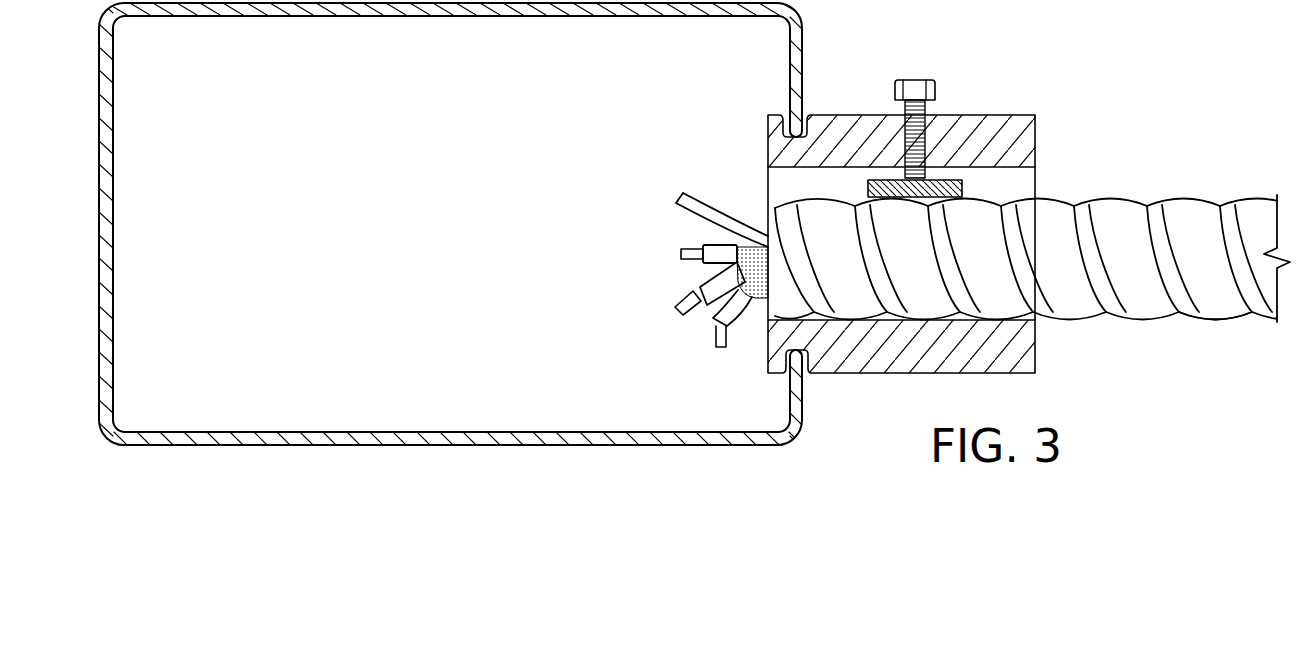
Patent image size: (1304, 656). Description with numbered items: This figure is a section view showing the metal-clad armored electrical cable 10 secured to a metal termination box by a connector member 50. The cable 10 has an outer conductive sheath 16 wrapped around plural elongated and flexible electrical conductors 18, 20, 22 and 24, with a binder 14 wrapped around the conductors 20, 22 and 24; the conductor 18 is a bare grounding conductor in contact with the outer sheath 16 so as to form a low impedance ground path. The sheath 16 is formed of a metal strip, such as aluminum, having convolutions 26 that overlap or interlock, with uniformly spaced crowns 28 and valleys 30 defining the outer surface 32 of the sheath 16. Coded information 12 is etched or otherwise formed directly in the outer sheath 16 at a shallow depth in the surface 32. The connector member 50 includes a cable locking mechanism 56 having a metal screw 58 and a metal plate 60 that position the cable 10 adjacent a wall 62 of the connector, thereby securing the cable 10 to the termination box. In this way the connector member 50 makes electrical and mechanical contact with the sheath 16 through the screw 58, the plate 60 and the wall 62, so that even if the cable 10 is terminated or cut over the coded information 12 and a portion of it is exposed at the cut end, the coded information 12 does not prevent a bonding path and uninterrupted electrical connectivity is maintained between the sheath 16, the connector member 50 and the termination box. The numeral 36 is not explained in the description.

The cable 10 is at (1226, 169).
The coded information 12 is at (1008, 192).
The binder 14 is at (759, 298).
The outer conductive sheath 16 is at (1182, 199).
The conductor 18 is at (716, 212).
The conductor 20 is at (703, 250).
The conductor 22 is at (700, 276).
The conductor 24 is at (710, 314).
The convolutions 26 is at (1195, 360).
The crowns 28 is at (1145, 320).
The valleys 30 is at (1142, 206).
The outer surface 32 is at (1058, 278).
The corrugation valley 36 is at (1218, 320).
The connector member 50 is at (1020, 115).
The cable locking mechanism 56 is at (878, 92).
The metal screw 58 is at (926, 109).
The metal plate 60 is at (965, 187).
The wall 62 is at (888, 320).